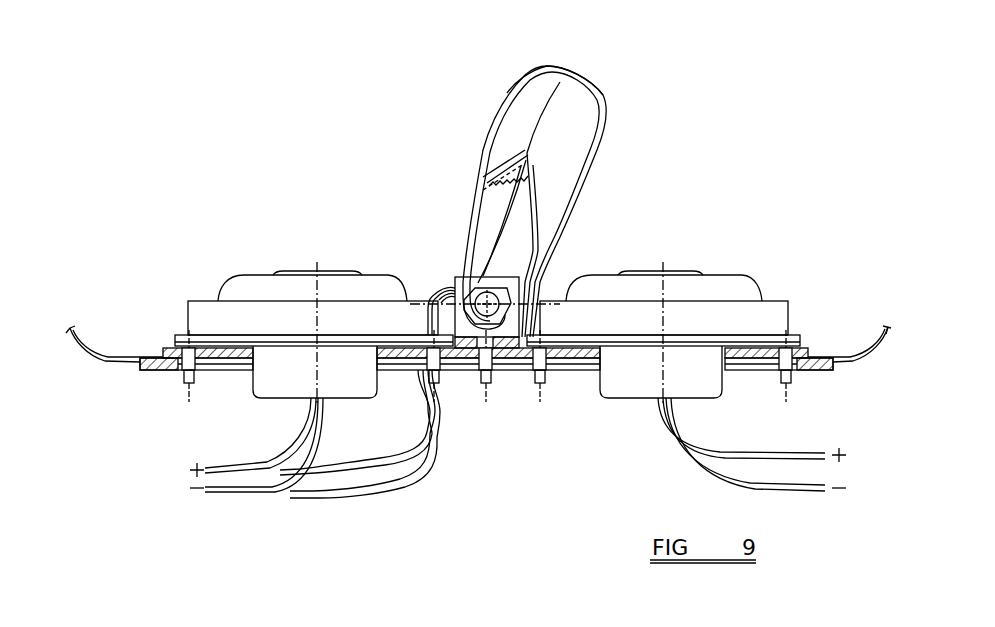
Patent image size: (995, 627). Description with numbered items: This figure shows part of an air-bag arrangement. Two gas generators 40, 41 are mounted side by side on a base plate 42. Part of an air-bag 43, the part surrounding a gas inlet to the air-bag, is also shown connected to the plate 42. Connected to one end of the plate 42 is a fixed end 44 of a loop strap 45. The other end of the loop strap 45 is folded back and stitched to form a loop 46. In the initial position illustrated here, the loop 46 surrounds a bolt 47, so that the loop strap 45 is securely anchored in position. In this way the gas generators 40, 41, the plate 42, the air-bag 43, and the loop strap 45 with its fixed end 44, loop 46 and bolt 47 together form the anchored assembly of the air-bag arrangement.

The gas generator 40 is at (336, 257).
The gas generator 41 is at (720, 262).
The base plate 42 is at (578, 371).
The air-bag 43 is at (84, 365).
The fixed end 44 is at (553, 246).
The loop strap 45 is at (610, 64).
The loop 46 is at (456, 235).
The bolt 47 is at (494, 291).